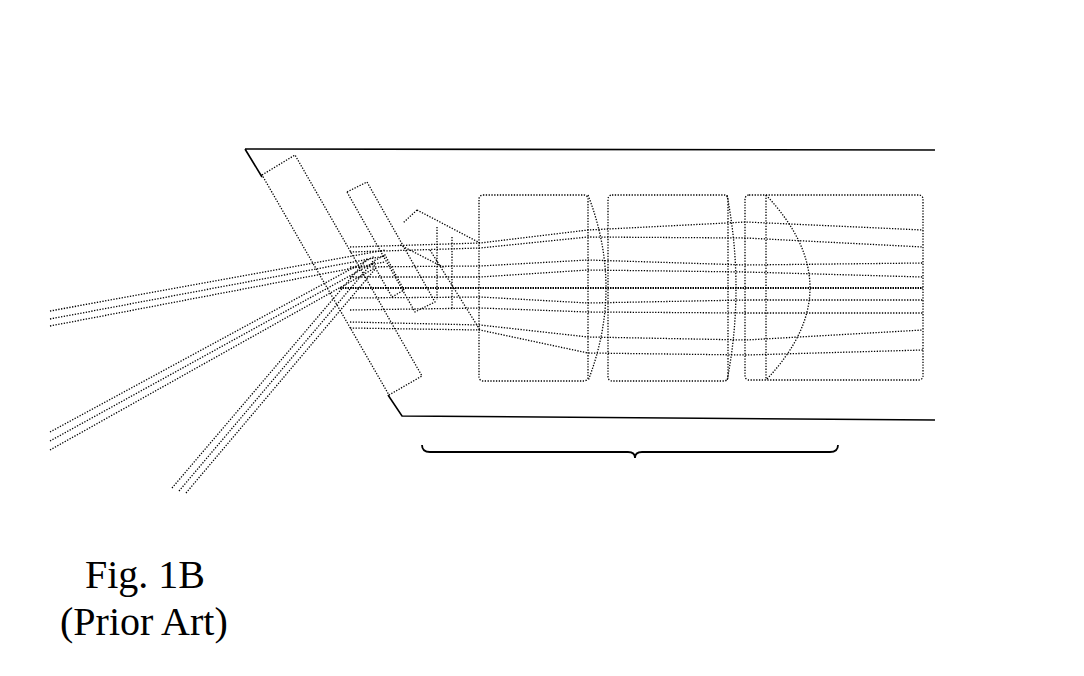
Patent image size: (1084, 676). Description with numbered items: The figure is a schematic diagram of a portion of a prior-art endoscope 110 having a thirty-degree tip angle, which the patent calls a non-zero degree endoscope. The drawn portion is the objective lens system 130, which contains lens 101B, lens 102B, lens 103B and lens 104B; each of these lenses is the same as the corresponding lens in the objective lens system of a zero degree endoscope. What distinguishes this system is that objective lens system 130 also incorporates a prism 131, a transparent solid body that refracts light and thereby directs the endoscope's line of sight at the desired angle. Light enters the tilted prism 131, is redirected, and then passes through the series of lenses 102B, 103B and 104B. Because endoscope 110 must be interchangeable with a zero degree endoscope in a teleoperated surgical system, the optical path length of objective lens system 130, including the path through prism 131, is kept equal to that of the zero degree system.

The endoscope 110 is at (186, 136).
The lens 101B is at (338, 210).
The prism 131 is at (427, 198).
The lens 102B is at (540, 187).
The lens 103B is at (666, 187).
The lens 104B is at (753, 187).
The objective lens system 130 is at (630, 467).